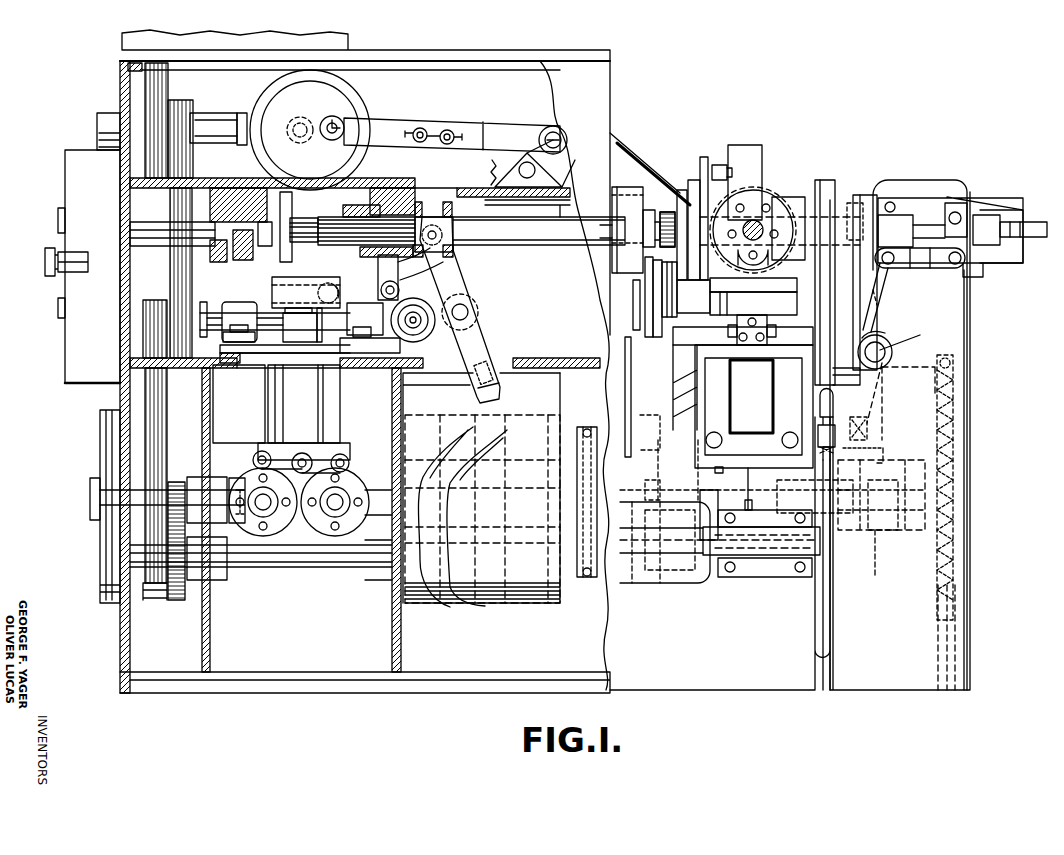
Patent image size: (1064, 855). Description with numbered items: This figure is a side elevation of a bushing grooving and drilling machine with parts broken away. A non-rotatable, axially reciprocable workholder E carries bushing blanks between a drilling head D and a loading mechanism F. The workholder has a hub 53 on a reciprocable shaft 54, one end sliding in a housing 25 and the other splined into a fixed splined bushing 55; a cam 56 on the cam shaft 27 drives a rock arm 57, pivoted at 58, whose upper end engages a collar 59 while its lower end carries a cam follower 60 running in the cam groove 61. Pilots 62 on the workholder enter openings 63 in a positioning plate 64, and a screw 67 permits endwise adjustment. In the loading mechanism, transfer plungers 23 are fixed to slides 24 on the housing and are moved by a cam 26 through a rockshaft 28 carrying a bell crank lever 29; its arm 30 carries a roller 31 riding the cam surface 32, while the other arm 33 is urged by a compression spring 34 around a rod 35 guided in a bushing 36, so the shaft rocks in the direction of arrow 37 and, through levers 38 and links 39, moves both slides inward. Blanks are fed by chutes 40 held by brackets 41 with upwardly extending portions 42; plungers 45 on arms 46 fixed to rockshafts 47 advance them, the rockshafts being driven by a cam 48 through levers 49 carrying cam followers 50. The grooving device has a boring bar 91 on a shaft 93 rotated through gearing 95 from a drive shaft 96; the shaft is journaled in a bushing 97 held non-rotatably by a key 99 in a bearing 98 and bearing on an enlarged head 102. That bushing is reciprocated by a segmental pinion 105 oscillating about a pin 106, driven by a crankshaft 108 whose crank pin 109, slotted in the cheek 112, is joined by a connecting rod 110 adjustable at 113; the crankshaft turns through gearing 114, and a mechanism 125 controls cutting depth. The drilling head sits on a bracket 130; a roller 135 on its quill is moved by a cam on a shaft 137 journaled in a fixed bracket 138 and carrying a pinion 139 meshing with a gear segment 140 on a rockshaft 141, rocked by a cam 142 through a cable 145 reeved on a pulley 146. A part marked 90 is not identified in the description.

The plungers 23 is at (865, 195).
The slide 24 is at (928, 227).
The housing 25 is at (903, 180).
The cam 26 is at (880, 575).
The cam shaft 27 is at (855, 530).
The rockshaft 28 is at (900, 340).
The bell crank lever 29 is at (872, 388).
The arm 30 is at (882, 410).
The roller 31 is at (840, 459).
The cam surface 32 is at (868, 432).
The arm 33 is at (892, 352).
The compression spring 34 is at (965, 440).
The rod 35 is at (965, 510).
The bushing 36 is at (935, 595).
The arrow 37 is at (882, 337).
The levers 38 is at (870, 300).
The links 39 is at (920, 265).
The chutes 40 is at (828, 200).
The brackets 41 is at (884, 250).
The upwardly extending portions 42 is at (808, 268).
The plungers 45 is at (820, 405).
The arms 46 is at (828, 470).
The rockshafts 47 is at (758, 578).
The cam 48 is at (665, 544).
The levers 49 is at (722, 480).
The cam followers 50 is at (700, 447).
The hub 53 is at (798, 197).
The reciprocable shaft 54 is at (522, 235).
The splined bushing 55 is at (378, 258).
The cam 56 is at (527, 598).
The rock arm 57 is at (485, 333).
The pivot 58 is at (470, 312).
The collar 59 is at (455, 210).
The cam follower 60 is at (503, 388).
The cam groove 61 is at (488, 432).
The pilots 62 is at (722, 165).
The openings 63 is at (704, 157).
The positioning plate 64 is at (690, 190).
The screw 67 is at (1025, 215).
The dashed block 90 is at (854, 208).
The boring bar 91 is at (612, 232).
The shaft 93 is at (308, 242).
The gearing 95 is at (220, 262).
The drive shaft 96 is at (156, 246).
The bushing 97 is at (670, 263).
The bearing 98 is at (565, 250).
The key 99 is at (435, 315).
The enlarged head 102 is at (700, 290).
The segmental pinion 105 is at (500, 168).
The pin 106 is at (540, 160).
The crankshaft 108 is at (330, 118).
The crank pin 109 is at (345, 125).
The connecting rod 110 is at (462, 127).
The cheek 112 is at (340, 150).
The adjustable connection 113 is at (445, 130).
The gearing 114 is at (237, 110).
The mechanism 125 is at (268, 383).
The brackets 130 is at (703, 350).
The roller 135 is at (753, 230).
The shaft 137 is at (650, 257).
The fixed bracket 138 is at (668, 212).
The pinion 139 is at (627, 217).
The gear segment 140 is at (693, 265).
The rockshaft 141 is at (640, 300).
The cam 142 is at (640, 585).
The cable 145 is at (660, 320).
The pulley 146 is at (630, 347).
The drilling head D is at (775, 200).
The workholder E is at (762, 147).
The loading mechanism F is at (926, 200).